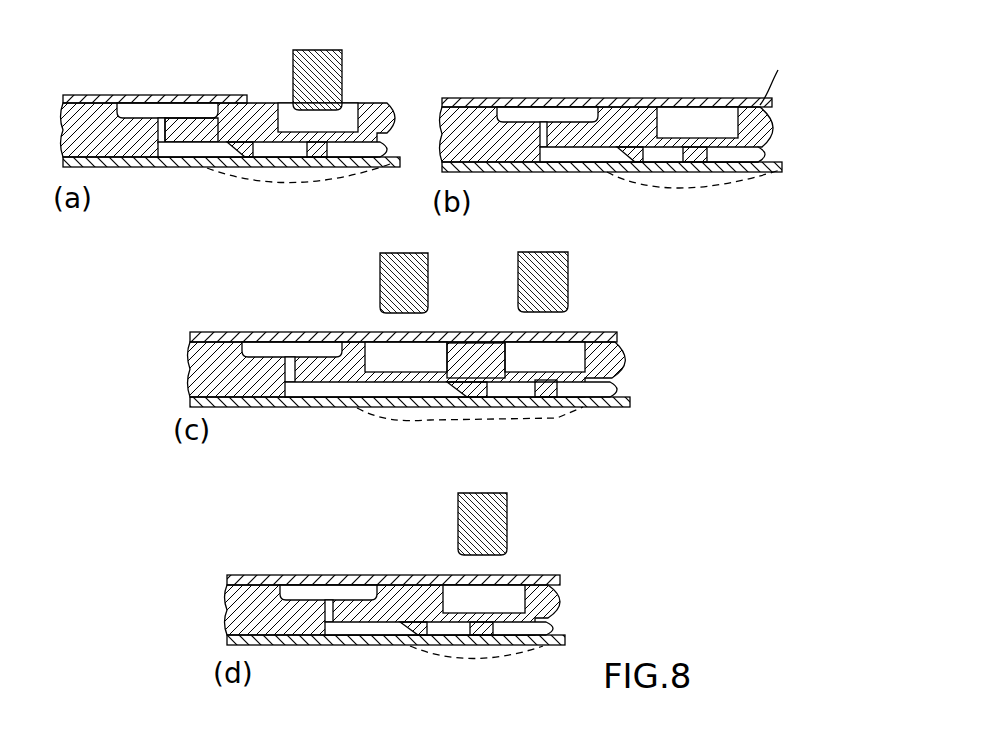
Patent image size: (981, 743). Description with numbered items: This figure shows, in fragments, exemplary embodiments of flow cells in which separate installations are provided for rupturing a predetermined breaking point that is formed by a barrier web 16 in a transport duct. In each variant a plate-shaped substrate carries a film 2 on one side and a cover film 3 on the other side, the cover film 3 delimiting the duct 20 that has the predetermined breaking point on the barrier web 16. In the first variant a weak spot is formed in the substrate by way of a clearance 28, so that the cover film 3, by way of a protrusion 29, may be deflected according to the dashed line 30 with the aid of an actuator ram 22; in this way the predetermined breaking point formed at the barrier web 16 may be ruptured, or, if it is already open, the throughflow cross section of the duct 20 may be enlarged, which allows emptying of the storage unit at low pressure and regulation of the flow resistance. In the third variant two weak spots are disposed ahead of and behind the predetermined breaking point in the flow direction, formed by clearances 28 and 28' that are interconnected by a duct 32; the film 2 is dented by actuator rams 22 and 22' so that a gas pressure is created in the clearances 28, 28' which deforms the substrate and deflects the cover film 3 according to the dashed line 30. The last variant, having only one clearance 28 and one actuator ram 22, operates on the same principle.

The film 2 is at (118, 98).
The cover film 3 is at (116, 167).
The barrier web 16 is at (247, 148).
The duct 20 is at (190, 148).
The actuator ram 22 is at (369, 298).
The actuator ram 22' is at (588, 280).
The clearance 28 is at (508, 333).
The clearance 28' is at (585, 331).
The protrusion 29 is at (323, 153).
The dashed line 30 is at (280, 182).
The duct 32 is at (472, 345).